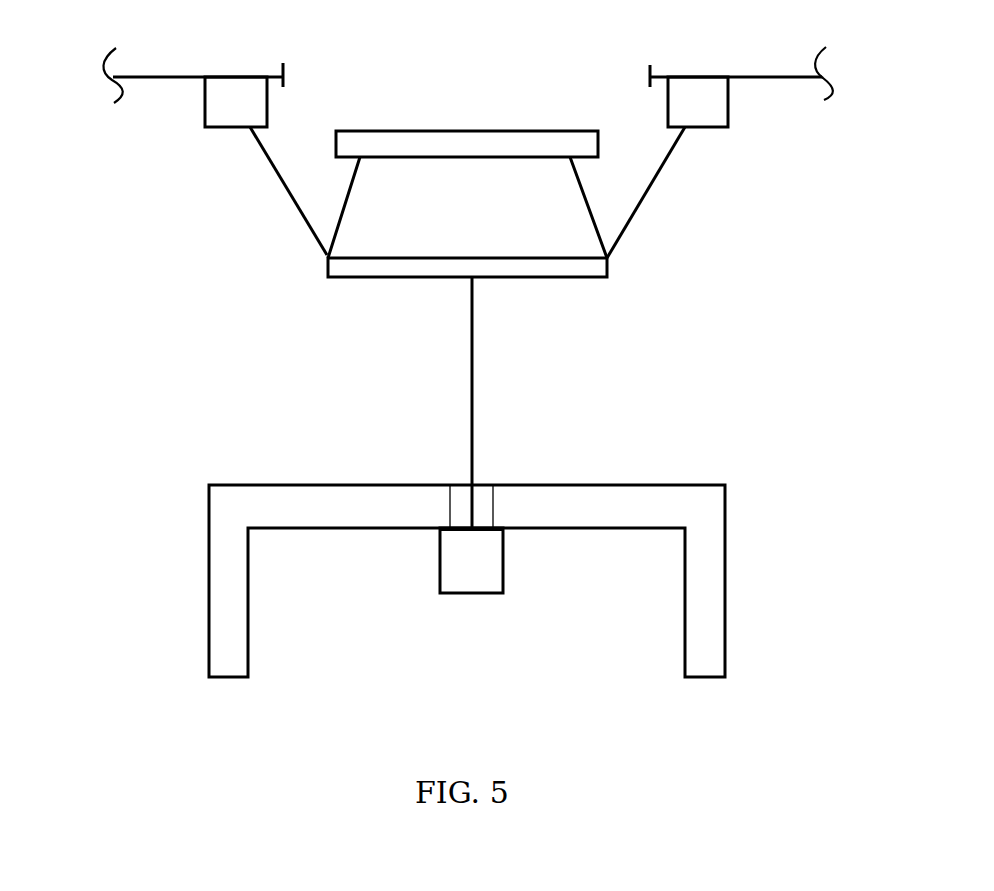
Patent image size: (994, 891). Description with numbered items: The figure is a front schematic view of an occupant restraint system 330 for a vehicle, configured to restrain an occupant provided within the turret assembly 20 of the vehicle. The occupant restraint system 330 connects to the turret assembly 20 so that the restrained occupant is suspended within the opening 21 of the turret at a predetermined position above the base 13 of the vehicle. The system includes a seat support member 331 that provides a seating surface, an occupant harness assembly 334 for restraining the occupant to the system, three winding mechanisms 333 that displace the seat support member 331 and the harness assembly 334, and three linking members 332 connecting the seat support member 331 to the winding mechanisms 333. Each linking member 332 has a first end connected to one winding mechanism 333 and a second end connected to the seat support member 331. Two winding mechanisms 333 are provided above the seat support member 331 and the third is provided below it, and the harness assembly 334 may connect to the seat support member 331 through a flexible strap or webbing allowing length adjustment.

The base 13 is at (287, 485).
The turret assembly 20 is at (165, 77).
The opening 21 is at (467, 175).
The occupant restraint system 330 is at (453, 324).
The seat support member 331 is at (518, 277).
The linking member 332 is at (287, 195).
The winding mechanism 333 is at (223, 127).
The occupant harness assembly 334 is at (397, 147).